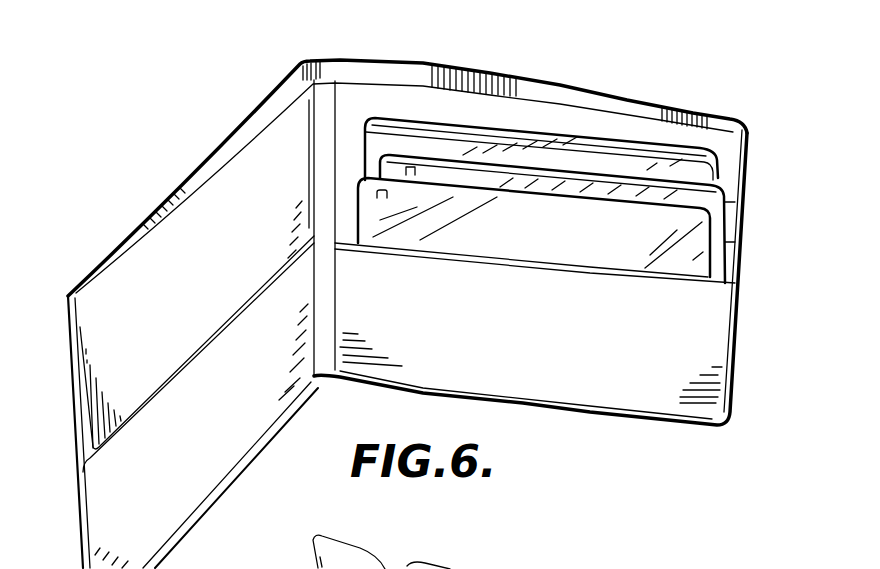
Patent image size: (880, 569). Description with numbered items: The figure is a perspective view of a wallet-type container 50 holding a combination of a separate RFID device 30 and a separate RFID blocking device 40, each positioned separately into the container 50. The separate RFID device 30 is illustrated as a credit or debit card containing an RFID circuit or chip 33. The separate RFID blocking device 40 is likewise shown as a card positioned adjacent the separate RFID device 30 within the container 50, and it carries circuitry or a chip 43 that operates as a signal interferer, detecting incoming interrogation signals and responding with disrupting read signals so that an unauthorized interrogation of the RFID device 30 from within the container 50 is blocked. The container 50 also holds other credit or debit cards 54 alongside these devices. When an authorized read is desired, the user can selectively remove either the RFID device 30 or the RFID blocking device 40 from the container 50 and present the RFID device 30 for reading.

The separate RFID device 30 is at (540, 250).
The RFID circuit or chip 33 is at (381, 198).
The separate RFID blocking device 40 is at (682, 185).
The circuitry or chip 43 is at (409, 166).
The container 50 is at (632, 378).
The other credit or debit cards 54 is at (640, 162).